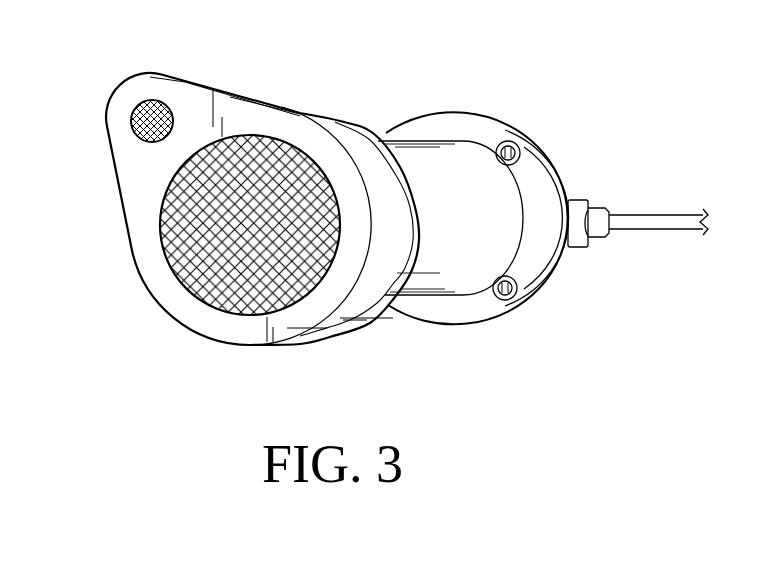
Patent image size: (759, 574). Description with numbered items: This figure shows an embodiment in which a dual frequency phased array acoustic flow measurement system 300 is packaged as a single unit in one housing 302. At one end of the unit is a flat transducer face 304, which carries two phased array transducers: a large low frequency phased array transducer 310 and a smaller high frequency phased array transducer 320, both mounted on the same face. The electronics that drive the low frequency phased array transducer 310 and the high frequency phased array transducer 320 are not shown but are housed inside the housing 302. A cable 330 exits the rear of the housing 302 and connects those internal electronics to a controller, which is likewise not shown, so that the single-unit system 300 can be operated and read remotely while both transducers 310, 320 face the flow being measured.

The dual frequency phased array acoustic flow measurement system 300 is at (472, 67).
The housing 302 is at (433, 277).
The flat transducer face 304 is at (138, 182).
The low frequency phased array transducer 310 is at (230, 270).
The high frequency phased array transducer 320 is at (133, 108).
The cable 330 is at (660, 212).